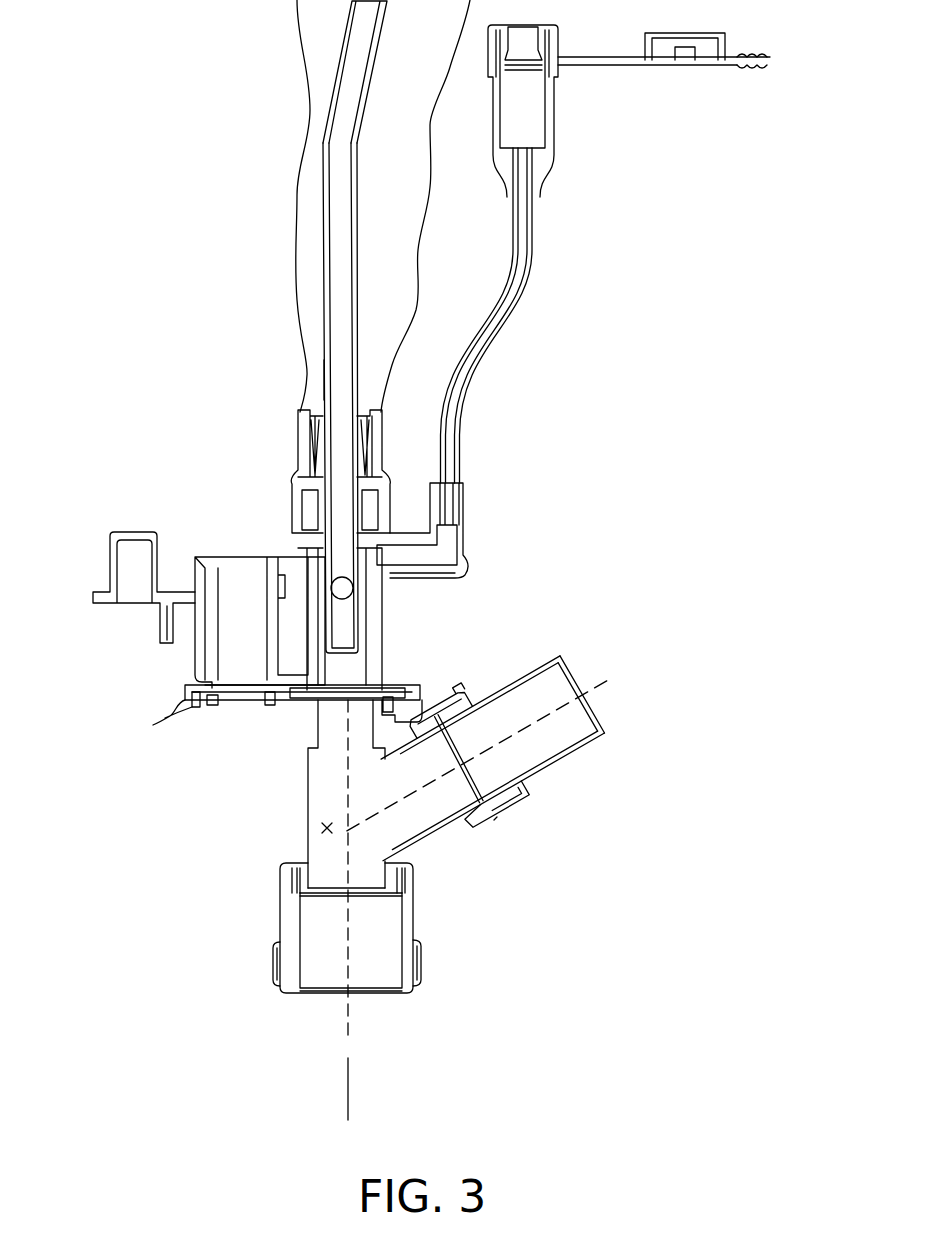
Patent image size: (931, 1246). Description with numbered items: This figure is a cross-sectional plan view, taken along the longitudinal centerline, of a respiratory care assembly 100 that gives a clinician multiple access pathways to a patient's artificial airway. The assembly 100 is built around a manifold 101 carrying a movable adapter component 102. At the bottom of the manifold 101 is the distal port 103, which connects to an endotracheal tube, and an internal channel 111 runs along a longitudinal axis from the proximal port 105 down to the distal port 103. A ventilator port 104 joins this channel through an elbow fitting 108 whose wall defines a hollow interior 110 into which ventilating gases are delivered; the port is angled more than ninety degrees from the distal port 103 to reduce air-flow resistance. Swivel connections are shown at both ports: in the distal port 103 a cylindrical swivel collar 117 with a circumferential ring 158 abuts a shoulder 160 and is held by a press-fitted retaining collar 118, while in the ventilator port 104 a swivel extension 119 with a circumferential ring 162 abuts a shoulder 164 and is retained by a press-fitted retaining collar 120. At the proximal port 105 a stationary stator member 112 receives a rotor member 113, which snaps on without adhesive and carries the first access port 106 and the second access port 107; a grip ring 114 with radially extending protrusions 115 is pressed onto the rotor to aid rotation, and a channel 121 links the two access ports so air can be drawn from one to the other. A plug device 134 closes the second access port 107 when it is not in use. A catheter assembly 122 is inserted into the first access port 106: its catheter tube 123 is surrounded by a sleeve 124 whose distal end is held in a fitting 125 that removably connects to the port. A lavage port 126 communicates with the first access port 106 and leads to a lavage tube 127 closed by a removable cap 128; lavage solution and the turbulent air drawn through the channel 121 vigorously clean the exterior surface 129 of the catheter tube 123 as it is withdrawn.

The respiratory care assembly 100 is at (192, 870).
The manifold 101 is at (528, 948).
The movable adapter component 102 is at (133, 452).
The distal port 103 is at (385, 952).
The ventilator port 104 is at (562, 720).
The proximal port 105 is at (404, 690).
The first access port 106 is at (300, 560).
The second access port 107 is at (240, 568).
The elbow fitting 108 is at (405, 843).
The hollow interior 110 is at (518, 702).
The internal channel 111 is at (315, 972).
The stator member 112 is at (250, 715).
The rotor member 113 is at (188, 690).
The grip ring 114 is at (170, 712).
The radially extending protrusions 115 is at (186, 716).
The swivel collar 117 is at (380, 995).
The retaining collar 118 is at (290, 962).
The swivel extension 119 is at (587, 748).
The retaining collar 120 is at (533, 806).
The channel 121 is at (295, 700).
The catheter assembly 122 is at (222, 262).
The catheter tube 123 is at (335, 140).
The sleeve 124 is at (318, 45).
The fitting 125 is at (297, 478).
The lavage port 126 is at (445, 567).
The lavage tube 127 is at (492, 335).
The removable cap 128 is at (680, 50).
The exterior surface 129 is at (325, 372).
The plug device 134 is at (128, 556).
The circumferential ring 158 is at (283, 945).
The shoulder 160 is at (288, 933).
The circumferential ring 162 is at (497, 817).
The shoulder 164 is at (487, 815).